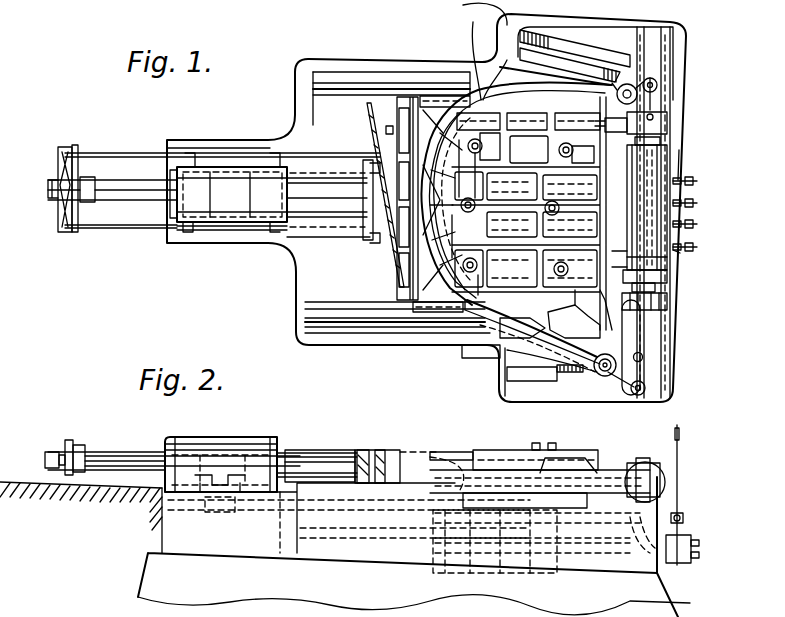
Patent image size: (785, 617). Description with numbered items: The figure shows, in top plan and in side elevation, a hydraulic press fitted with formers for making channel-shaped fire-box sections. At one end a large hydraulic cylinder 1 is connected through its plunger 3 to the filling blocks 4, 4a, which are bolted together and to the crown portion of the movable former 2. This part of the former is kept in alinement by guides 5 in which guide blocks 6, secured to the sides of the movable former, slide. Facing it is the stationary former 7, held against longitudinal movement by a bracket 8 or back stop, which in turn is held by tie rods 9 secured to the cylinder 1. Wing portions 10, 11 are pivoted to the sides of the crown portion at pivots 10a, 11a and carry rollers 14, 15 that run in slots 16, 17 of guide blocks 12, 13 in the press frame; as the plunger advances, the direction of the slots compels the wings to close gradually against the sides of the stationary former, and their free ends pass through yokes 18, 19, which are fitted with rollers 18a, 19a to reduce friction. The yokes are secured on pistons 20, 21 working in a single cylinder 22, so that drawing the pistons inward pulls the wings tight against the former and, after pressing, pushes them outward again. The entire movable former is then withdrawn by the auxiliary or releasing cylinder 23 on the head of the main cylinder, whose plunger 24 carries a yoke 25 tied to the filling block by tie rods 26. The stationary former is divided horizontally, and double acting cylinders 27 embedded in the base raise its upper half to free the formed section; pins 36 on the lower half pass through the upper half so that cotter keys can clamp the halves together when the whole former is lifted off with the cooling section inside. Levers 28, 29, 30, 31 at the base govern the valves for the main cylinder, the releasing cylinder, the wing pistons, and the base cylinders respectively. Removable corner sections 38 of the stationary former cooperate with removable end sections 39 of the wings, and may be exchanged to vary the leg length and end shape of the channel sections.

In FIG. 1, the cylinder 1 is at (228, 192).
In FIG. 2, the cylinder 1 is at (203, 435).
In FIG. 1, the movable former 2 is at (400, 250).
In FIG. 1, the plunger 3 is at (324, 195).
In FIG. 2, the plunger 3 is at (322, 455).
In FIG. 1, the filling block 4 is at (400, 143).
In FIG. 2, the filling block 4 is at (380, 463).
In FIG. 1, the filling block 4a is at (388, 131).
In FIG. 1, the guides 5 is at (342, 75).
In FIG. 2, the guides 5 is at (337, 458).
In FIG. 1, the guide blocks 6 is at (445, 95).
In FIG. 1, the stationary former 7 is at (540, 127).
In FIG. 1, the bracket 8 is at (665, 258).
In FIG. 2, the bracket 8 is at (593, 461).
In FIG. 1, the tie rods 9 is at (288, 148).
In FIG. 2, the tie rods 9 is at (343, 560).
In FIG. 1, the wing portion 10 is at (532, 94).
In FIG. 1, the pivot 10a is at (488, 56).
In FIG. 1, the wing portion 11 is at (522, 325).
In FIG. 2, the wing portion 11 is at (520, 467).
In FIG. 1, the pivot 11a is at (470, 350).
In FIG. 2, the pivot 11a is at (485, 465).
In FIG. 1, the guide block 12 is at (570, 33).
In FIG. 1, the guide block 13 is at (557, 382).
In FIG. 1, the roller 14 is at (615, 82).
In FIG. 1, the roller 15 is at (612, 378).
In FIG. 1, the slot 16 is at (471, 14).
In FIG. 1, the slot 17 is at (497, 373).
In FIG. 1, the yoke 18 is at (660, 100).
In FIG. 1, the roller 18a is at (658, 86).
In FIG. 1, the yoke 19 is at (645, 368).
In FIG. 2, the yoke 19 is at (655, 466).
In FIG. 1, the roller 19a is at (647, 388).
In FIG. 1, the piston 20 is at (683, 167).
In FIG. 1, the piston 21 is at (667, 280).
In FIG. 1, the cylinder 22 is at (670, 157).
In FIG. 2, the cylinder 22 is at (660, 478).
In FIG. 1, the auxiliary cylinder 23 is at (112, 203).
In FIG. 2, the auxiliary cylinder 23 is at (142, 452).
In FIG. 1, the releasing cylinder plunger 24 is at (74, 233).
In FIG. 2, the releasing cylinder plunger 24 is at (70, 448).
In FIG. 1, the yoke 25 is at (57, 170).
In FIG. 2, the yoke 25 is at (48, 452).
In FIG. 1, the tie rods 26 is at (140, 153).
In FIG. 2, the tie rods 26 is at (100, 458).
In FIG. 1, the double acting cylinders 27 is at (690, 214).
In FIG. 2, the double acting cylinders 27 is at (410, 456).
In FIG. 1, the lever 28 is at (698, 203).
In FIG. 1, the lever 29 is at (700, 247).
In FIG. 1, the lever 30 is at (683, 253).
In FIG. 2, the lever 30 is at (683, 518).
In FIG. 1, the lever 31 is at (698, 181).
In FIG. 1, the pins 36 is at (566, 143).
In FIG. 1, the corner sections 38 is at (640, 127).
In FIG. 1, the end sections 39 is at (672, 28).